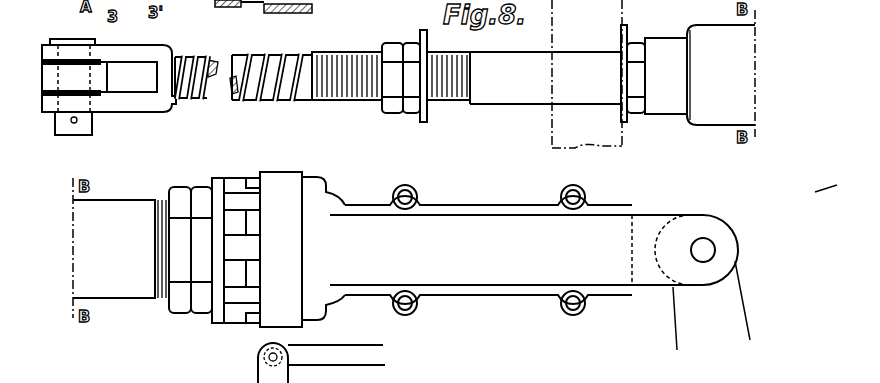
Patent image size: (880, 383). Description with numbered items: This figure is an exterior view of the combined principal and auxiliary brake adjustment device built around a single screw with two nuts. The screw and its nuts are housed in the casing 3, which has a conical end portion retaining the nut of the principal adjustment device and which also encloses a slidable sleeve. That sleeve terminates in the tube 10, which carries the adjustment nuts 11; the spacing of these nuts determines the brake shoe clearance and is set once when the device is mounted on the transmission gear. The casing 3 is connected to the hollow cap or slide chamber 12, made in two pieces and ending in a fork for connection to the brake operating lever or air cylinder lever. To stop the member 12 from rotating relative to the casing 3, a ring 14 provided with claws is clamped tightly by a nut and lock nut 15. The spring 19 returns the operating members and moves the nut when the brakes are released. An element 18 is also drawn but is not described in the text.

The casing 3 is at (700, 75).
The tube 10 is at (500, 83).
The adjustment nuts 11 is at (388, 43).
The hollow cap or slide chamber 12 is at (317, 302).
The ring 14 is at (220, 182).
The nut and lock nut 15 is at (203, 192).
The plate 18 is at (273, 15).
The spring 19 is at (263, 55).